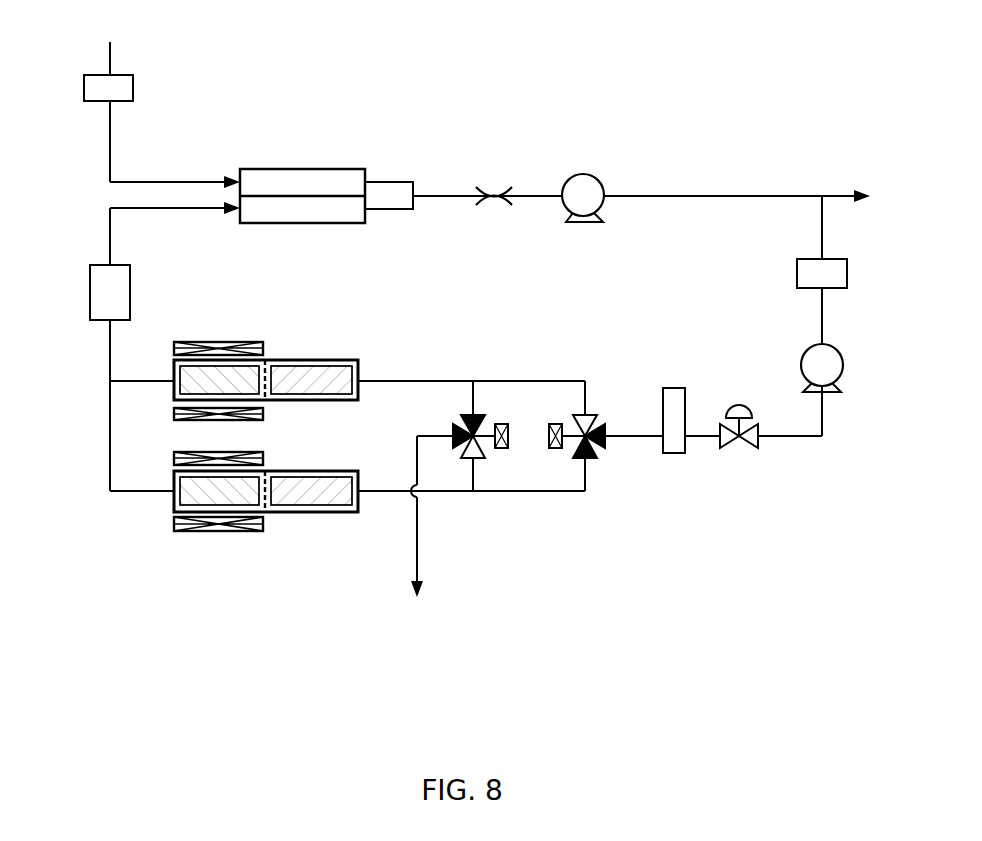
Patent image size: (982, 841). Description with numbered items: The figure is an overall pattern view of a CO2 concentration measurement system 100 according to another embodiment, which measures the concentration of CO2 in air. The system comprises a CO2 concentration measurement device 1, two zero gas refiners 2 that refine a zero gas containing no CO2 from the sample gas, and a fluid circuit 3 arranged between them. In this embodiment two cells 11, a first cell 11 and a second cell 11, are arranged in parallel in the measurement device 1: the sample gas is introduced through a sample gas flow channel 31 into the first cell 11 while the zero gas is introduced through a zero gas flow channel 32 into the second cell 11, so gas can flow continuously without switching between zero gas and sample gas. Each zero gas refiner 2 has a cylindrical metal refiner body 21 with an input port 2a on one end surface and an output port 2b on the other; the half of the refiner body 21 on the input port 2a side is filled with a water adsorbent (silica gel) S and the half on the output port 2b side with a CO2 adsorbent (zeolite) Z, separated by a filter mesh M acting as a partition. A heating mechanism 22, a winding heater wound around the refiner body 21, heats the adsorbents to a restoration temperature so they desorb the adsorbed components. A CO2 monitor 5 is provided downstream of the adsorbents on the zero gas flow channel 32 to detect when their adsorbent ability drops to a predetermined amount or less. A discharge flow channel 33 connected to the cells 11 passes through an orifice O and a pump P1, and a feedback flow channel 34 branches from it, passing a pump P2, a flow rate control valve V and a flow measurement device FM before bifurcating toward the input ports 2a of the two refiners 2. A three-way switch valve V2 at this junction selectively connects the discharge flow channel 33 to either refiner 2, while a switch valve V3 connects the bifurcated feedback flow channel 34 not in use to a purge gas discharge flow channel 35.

The CO2 concentration measurement system 100 is at (568, 115).
The CO2 concentration measurement device 1 is at (361, 157).
The cell 11 is at (268, 168).
The zero gas refiner 2 is at (338, 348).
The input port 2a is at (359, 379).
The output port 2b is at (173, 379).
The refiner body 21 is at (306, 359).
The heating mechanism 22 is at (224, 340).
The fluid circuit 3 is at (772, 178).
The CO2 monitor 5 is at (90, 292).
The sample gas flow channel 31 is at (110, 141).
The zero gas flow channel 32 is at (110, 234).
The discharge flow channel 33 is at (697, 200).
The feedback flow channel 34 is at (822, 322).
The purge gas discharge flow channel 35 is at (420, 535).
The filter mesh M is at (278, 401).
The orifice O is at (494, 187).
The pump P1 is at (603, 185).
The pump P2 is at (802, 361).
The flow rate control valve V is at (730, 447).
The switch valve V2 is at (610, 415).
The switch valve V3 is at (505, 418).
The flow measurement device FM is at (675, 455).